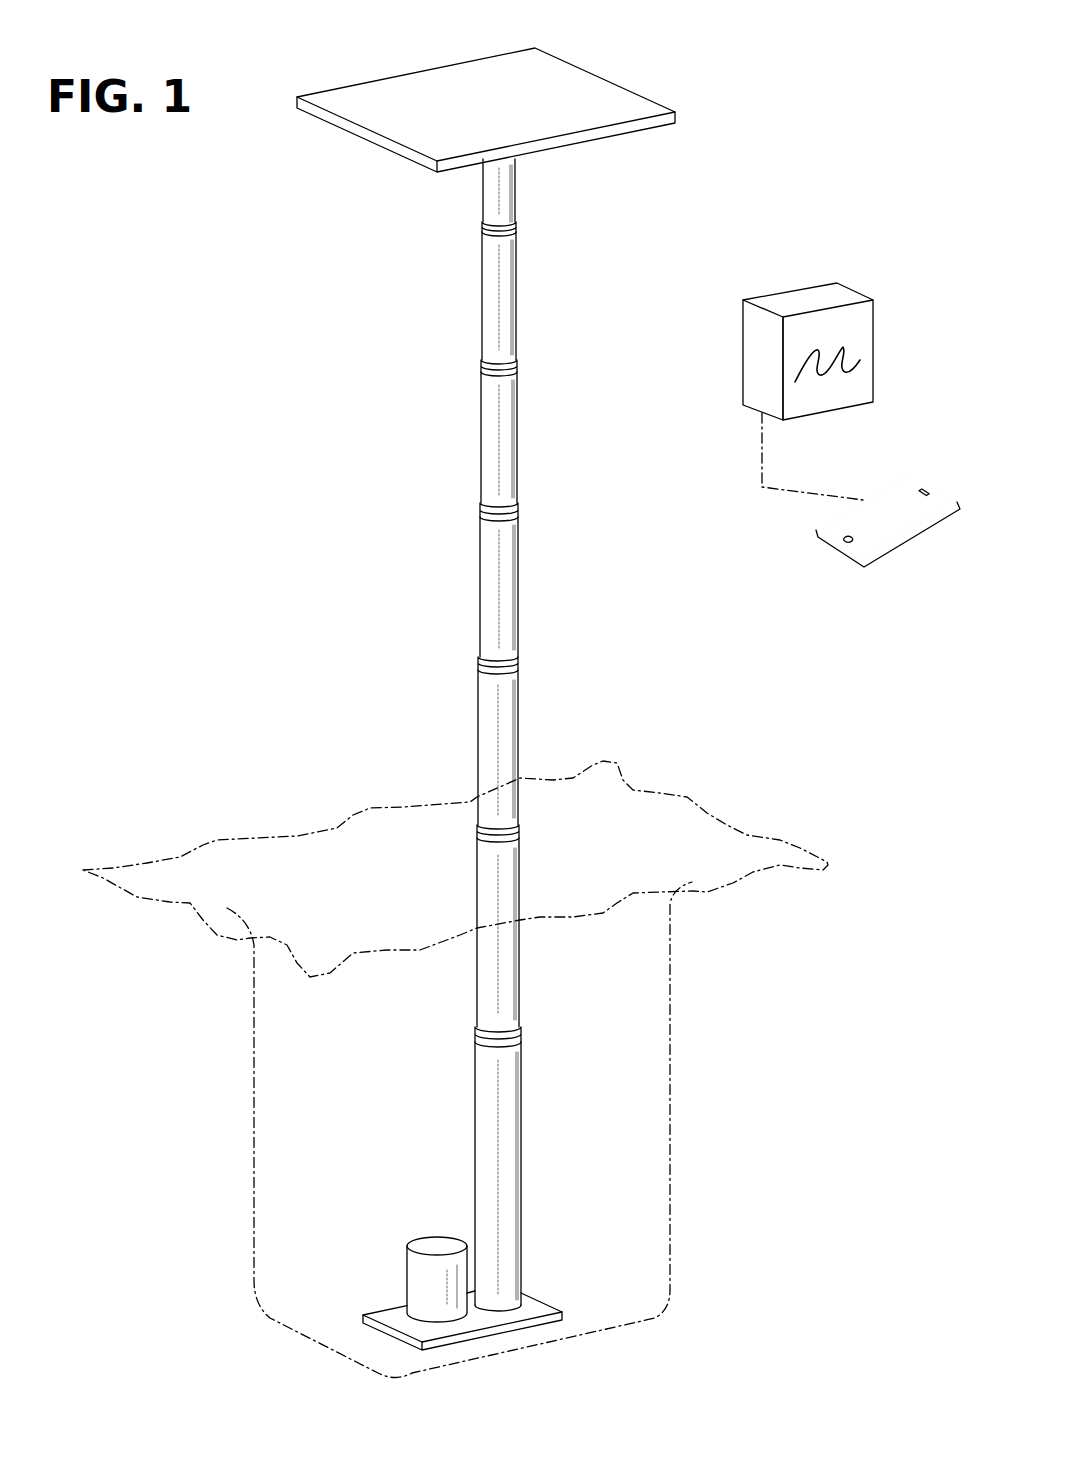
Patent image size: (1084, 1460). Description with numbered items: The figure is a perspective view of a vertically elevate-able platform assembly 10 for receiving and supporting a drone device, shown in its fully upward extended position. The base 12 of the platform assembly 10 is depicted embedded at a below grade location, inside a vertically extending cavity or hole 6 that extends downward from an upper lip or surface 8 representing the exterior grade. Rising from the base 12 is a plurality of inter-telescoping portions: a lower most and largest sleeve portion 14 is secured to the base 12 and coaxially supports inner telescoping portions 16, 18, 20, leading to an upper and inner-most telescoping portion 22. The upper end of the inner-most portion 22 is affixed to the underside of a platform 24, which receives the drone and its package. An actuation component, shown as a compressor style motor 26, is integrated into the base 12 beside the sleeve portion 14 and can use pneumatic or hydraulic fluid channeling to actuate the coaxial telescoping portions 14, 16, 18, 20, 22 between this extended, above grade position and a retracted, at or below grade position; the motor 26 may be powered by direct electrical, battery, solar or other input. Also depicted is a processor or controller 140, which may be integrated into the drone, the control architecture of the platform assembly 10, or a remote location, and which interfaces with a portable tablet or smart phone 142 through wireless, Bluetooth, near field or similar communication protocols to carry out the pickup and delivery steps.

The vertically extending cavity or hole 6 is at (298, 1102).
The upper lip or surface 8 is at (190, 868).
The platform assembly 10 is at (183, 629).
The base 12 is at (383, 1312).
The lower most and largest sleeve portion 14 is at (523, 1235).
The telescoping portion 16 is at (478, 880).
The telescoping portion 18 is at (520, 715).
The telescoping portion 20 is at (477, 578).
The upper and inner-most telescoping portion 22 is at (517, 188).
The platform 24 is at (395, 90).
The compressor style motor 26 is at (430, 1237).
The processor or controller 140 is at (742, 342).
The tablet or smart phone 142 is at (900, 540).